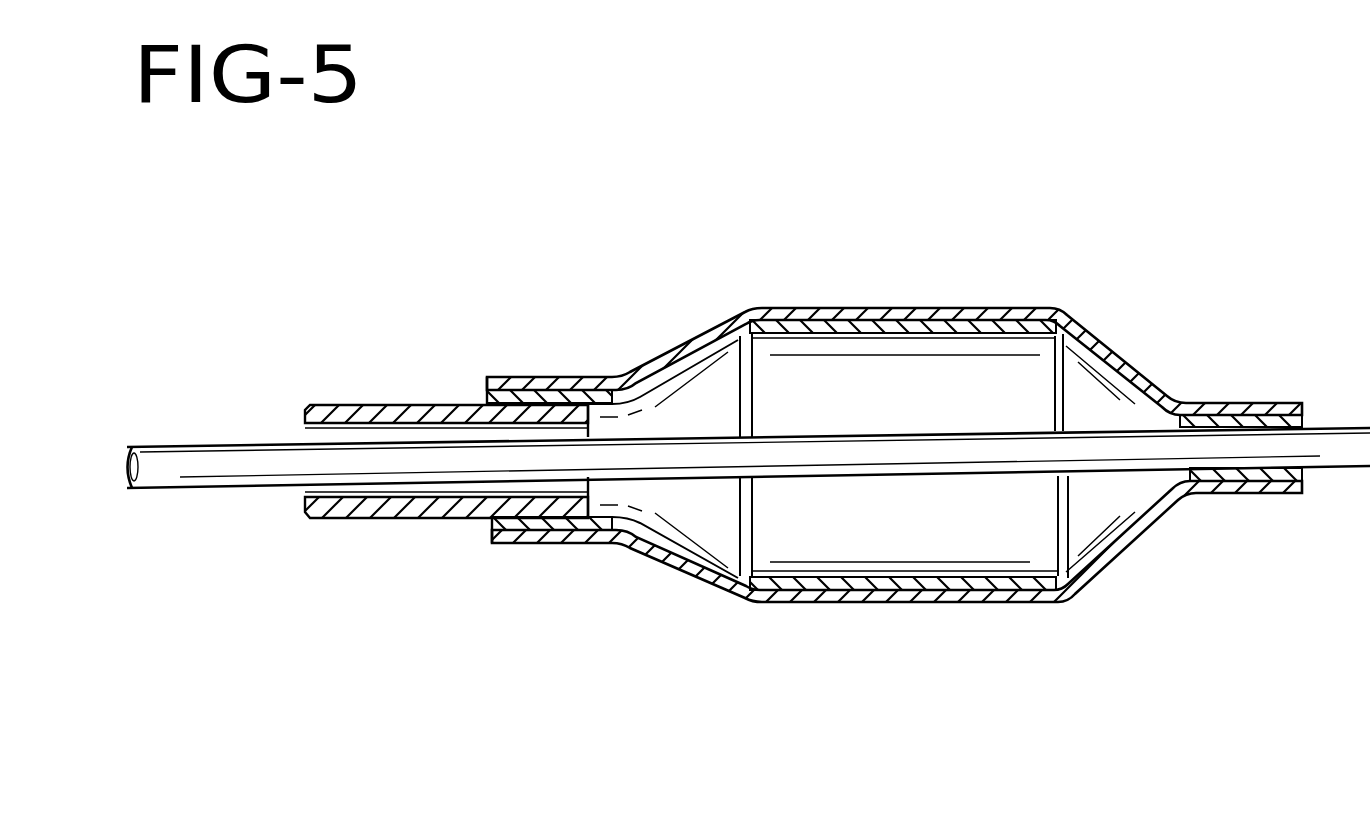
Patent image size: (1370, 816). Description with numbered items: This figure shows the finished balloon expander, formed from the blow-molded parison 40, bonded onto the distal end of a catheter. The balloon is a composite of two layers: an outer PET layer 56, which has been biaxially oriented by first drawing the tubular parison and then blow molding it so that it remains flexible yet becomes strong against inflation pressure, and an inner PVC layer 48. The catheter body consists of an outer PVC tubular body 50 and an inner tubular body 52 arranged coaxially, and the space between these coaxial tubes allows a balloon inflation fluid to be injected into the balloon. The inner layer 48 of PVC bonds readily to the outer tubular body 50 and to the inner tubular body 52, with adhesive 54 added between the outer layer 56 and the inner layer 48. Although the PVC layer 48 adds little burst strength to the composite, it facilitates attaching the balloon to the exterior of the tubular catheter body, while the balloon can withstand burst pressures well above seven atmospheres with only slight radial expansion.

The parison 40 is at (903, 261).
The inner layer 48 is at (955, 350).
The outer tubular body 50 is at (395, 403).
The inner tubular body 52 is at (240, 483).
The adhesive 54 is at (927, 602).
The PET layer 56 is at (882, 602).